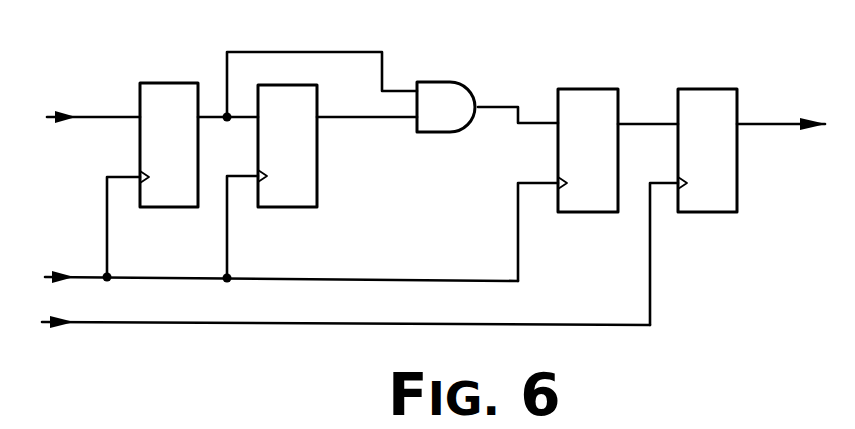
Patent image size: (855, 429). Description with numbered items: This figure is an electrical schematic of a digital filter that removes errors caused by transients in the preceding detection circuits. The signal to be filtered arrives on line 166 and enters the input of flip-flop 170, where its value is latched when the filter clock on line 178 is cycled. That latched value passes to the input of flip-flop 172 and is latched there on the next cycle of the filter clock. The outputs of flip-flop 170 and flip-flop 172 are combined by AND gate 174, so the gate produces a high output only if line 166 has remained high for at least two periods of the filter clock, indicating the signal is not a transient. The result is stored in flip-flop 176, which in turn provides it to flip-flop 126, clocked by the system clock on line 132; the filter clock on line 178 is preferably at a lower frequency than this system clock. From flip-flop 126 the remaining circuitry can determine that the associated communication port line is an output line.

The line 166 is at (84, 112).
The flip-flop 170 is at (172, 82).
The flip-flop 172 is at (317, 190).
The AND gate 174 is at (451, 86).
The flip-flop 176 is at (597, 88).
The flip-flop 126 is at (711, 88).
The line 178 is at (80, 277).
The line 132 is at (116, 322).